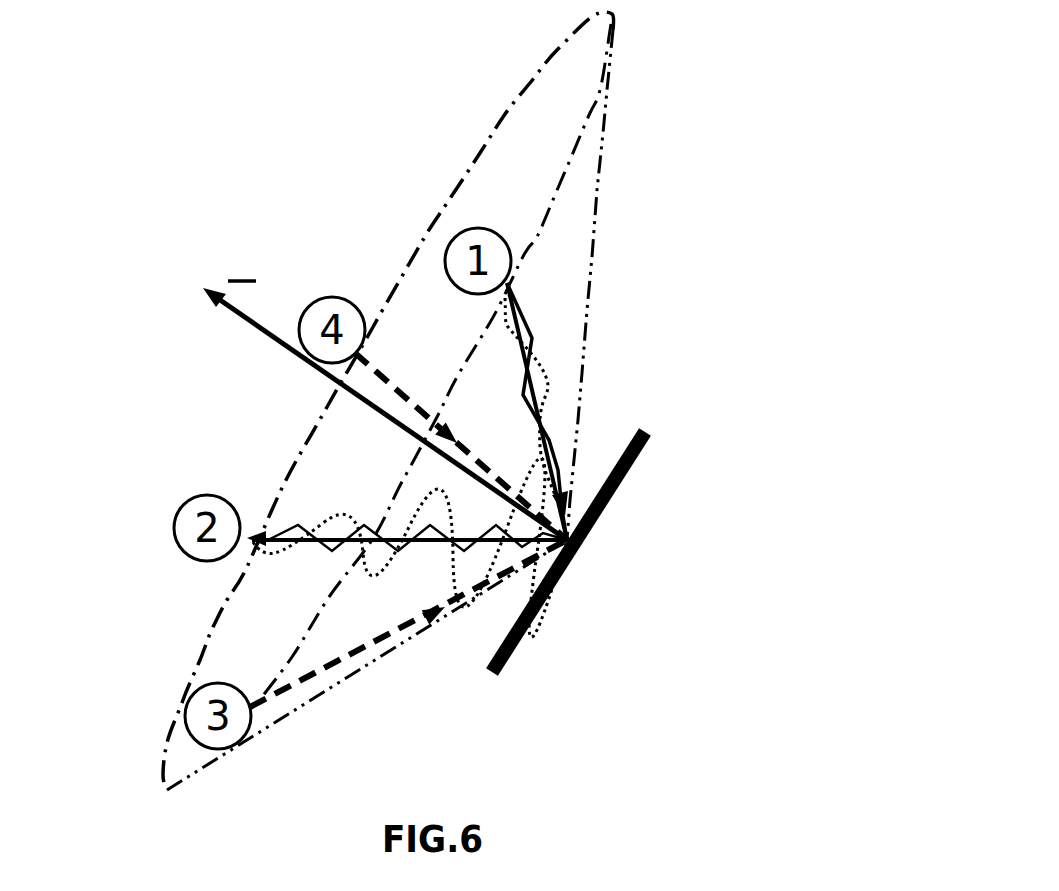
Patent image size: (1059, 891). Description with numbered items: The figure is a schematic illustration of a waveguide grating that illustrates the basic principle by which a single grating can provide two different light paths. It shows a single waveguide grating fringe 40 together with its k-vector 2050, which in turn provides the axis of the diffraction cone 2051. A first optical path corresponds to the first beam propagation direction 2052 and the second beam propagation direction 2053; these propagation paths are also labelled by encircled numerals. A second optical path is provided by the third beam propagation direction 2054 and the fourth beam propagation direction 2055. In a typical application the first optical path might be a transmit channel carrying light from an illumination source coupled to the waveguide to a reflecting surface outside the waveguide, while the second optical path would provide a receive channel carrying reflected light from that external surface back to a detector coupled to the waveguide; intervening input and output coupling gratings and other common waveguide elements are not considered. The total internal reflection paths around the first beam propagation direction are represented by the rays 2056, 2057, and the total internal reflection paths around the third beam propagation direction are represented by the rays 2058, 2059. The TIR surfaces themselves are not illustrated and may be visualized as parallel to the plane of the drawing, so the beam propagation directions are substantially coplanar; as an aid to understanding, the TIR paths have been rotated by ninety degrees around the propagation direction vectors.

The waveguide grating fringe 40 is at (650, 432).
The k-vector 2050 is at (230, 312).
The diffraction cone 2051 is at (512, 580).
The first beam propagation direction 2052 is at (508, 283).
The second beam propagation direction 2053 is at (258, 545).
The third beam propagation direction 2054 is at (338, 662).
The fourth beam propagation direction 2055 is at (495, 228).
The ray 2056 is at (532, 337).
The ray 2057 is at (543, 405).
The ray 2058 is at (277, 550).
The ray 2059 is at (330, 547).